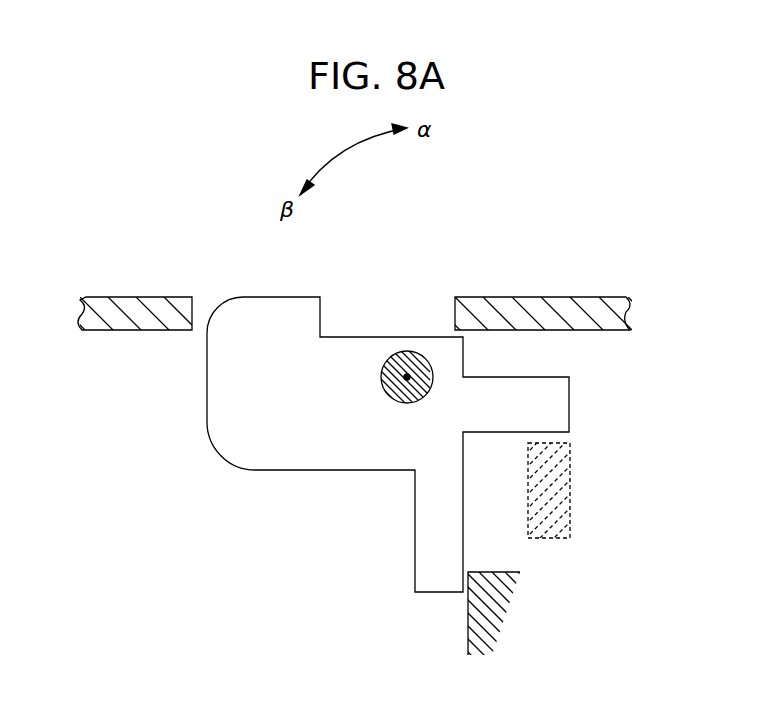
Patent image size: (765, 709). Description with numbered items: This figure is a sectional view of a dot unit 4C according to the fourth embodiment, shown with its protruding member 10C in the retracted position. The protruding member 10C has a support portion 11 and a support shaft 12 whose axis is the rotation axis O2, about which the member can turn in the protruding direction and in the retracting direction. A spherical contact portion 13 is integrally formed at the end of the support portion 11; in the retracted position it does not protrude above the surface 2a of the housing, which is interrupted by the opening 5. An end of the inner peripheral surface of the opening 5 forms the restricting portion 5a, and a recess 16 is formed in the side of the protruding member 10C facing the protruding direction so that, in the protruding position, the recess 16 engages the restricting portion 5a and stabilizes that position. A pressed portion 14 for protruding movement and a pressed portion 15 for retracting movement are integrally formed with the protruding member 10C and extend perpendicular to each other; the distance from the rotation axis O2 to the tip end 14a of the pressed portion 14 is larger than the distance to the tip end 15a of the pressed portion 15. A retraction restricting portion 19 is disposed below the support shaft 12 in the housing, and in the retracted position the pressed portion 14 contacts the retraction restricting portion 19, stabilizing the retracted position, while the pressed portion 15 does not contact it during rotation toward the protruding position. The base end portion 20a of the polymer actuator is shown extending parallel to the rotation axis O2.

The dot unit 4C is at (523, 167).
The protruding member 10C is at (223, 468).
The contact portion 13 is at (217, 390).
The recess 16 is at (382, 338).
The pressed portion for retracting movement 15 is at (515, 387).
The tip end of pressed portion for retracting movement 15a is at (572, 405).
The support portion 11 is at (299, 457).
The pressed portion for protruding movement 14 is at (427, 548).
The tip end of pressed portion for protruding movement 14a is at (433, 593).
The support shaft 12 is at (397, 390).
The rotation axis O2 is at (405, 377).
The opening 5 is at (167, 307).
The surface of housing 2a is at (535, 297).
The restricting portion 5a is at (453, 297).
The base end portion of polymer actuator 20a is at (545, 542).
The retraction restricting portion 19 is at (475, 635).